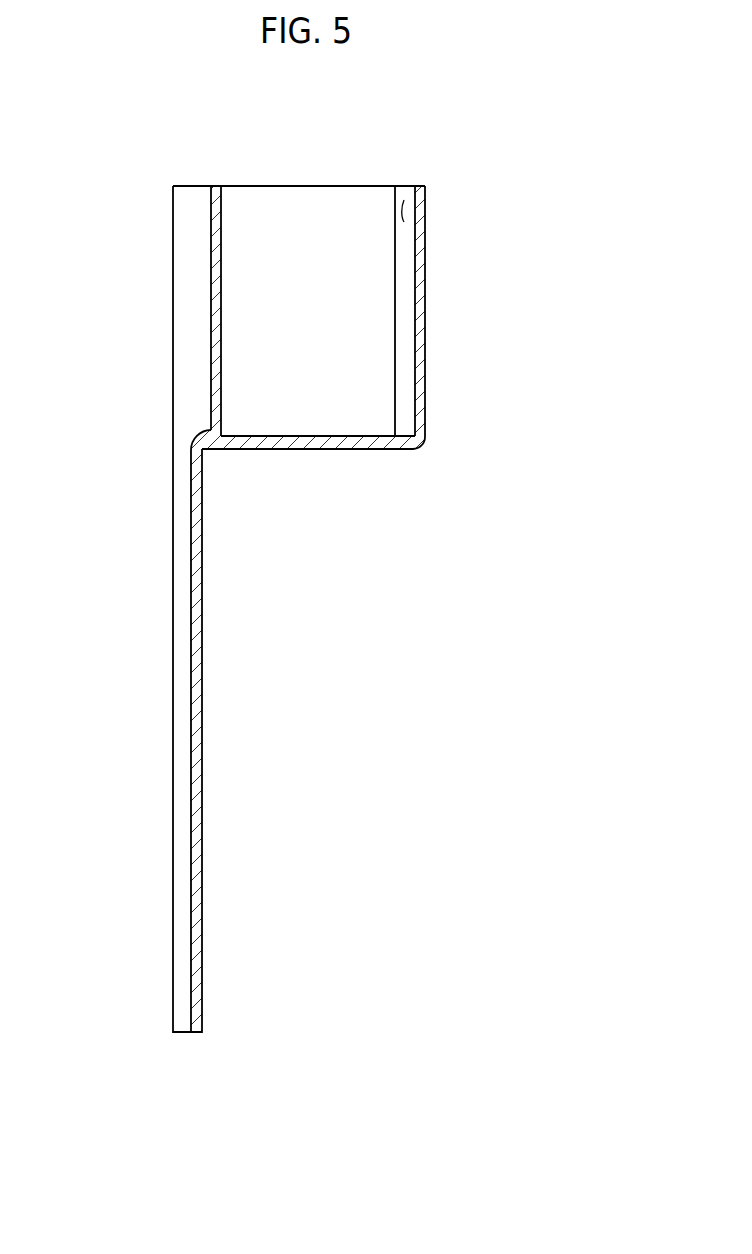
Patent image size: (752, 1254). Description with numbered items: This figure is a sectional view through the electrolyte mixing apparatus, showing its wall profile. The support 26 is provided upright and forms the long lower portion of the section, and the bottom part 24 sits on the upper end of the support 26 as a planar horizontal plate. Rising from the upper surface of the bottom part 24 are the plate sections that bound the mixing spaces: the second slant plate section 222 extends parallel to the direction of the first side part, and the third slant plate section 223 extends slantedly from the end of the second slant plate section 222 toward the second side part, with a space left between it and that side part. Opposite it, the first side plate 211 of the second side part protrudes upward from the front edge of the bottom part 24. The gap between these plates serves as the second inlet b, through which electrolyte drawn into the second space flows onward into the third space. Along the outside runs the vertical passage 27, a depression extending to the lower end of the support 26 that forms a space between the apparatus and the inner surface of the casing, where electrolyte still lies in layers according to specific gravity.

The vertical passage 27 is at (193, 312).
The third slant plate section 223 is at (211, 228).
The second slant plate section 222 is at (314, 243).
The second inlet b is at (403, 213).
The first side plate 211 is at (425, 318).
The bottom part 24 is at (337, 449).
The support 26 is at (203, 747).